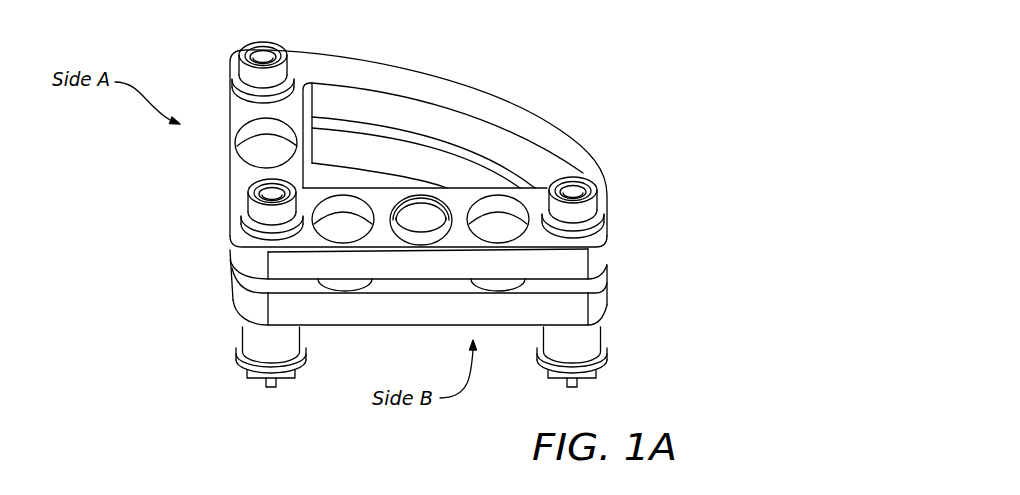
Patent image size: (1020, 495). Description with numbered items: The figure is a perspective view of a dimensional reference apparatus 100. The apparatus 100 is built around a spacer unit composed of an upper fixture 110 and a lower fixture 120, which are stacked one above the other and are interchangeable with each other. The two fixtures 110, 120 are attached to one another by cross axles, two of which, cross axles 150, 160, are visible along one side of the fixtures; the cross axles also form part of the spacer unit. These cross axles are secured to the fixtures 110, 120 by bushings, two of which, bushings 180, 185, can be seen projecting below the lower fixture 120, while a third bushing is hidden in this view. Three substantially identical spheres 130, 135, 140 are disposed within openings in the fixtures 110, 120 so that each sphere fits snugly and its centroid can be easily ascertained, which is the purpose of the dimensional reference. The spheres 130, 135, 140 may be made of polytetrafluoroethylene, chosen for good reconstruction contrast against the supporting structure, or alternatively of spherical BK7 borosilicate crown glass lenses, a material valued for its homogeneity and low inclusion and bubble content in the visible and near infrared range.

The dimensional reference apparatus 100 is at (597, 77).
The upper fixture 110 is at (597, 262).
The lower fixture 120 is at (597, 307).
The sphere 130 is at (267, 156).
The sphere 135 is at (345, 213).
The sphere 140 is at (493, 222).
The cross axle 150 is at (250, 193).
The cross axle 160 is at (245, 75).
The bushing 180 is at (255, 341).
The bushing 185 is at (592, 338).